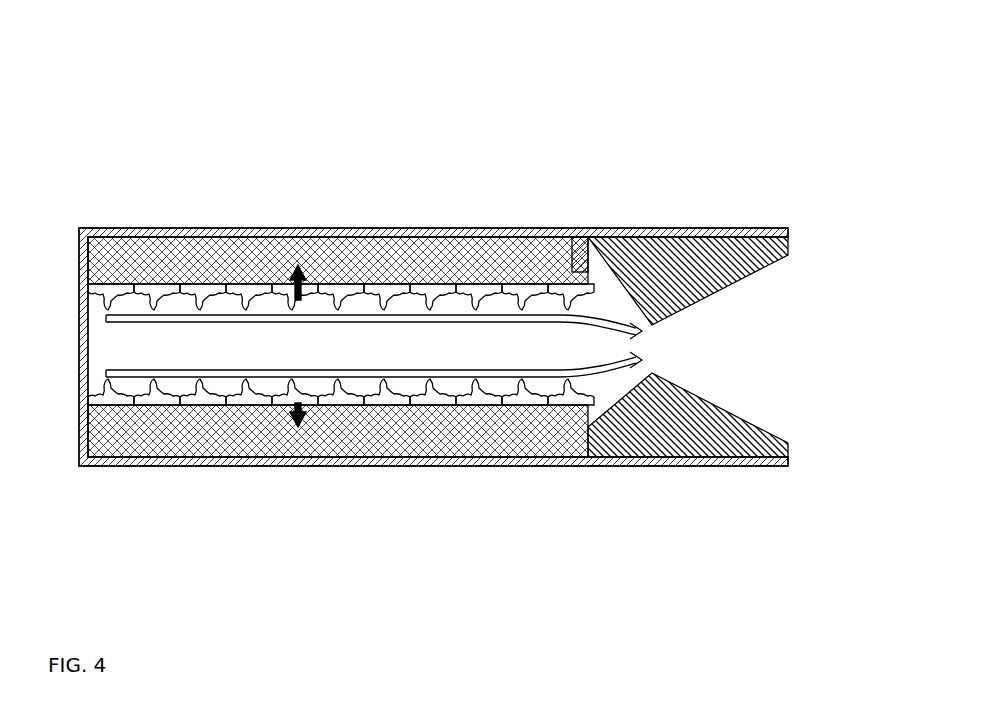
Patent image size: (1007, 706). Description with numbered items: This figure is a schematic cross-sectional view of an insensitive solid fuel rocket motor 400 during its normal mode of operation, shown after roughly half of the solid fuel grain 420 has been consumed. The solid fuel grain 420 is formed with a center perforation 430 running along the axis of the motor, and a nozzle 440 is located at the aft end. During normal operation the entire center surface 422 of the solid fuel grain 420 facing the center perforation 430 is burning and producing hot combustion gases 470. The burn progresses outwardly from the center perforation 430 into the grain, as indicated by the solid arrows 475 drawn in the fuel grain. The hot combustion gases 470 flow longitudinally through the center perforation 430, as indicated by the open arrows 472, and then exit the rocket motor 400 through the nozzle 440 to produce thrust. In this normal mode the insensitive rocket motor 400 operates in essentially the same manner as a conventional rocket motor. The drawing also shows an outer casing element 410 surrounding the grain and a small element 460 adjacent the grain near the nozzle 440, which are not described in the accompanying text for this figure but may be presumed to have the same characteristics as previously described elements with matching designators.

The insensitive rocket motor 400 is at (165, 48).
The housing 410 is at (712, 467).
The solid fuel grain 420 is at (490, 257).
The center surface 422 is at (207, 280).
The center perforation 430 is at (453, 352).
The nozzle 440 is at (745, 278).
The seal 460 is at (581, 252).
The hot combustion gases 470 is at (205, 405).
The open arrows 472 is at (359, 376).
The solid arrows 475 is at (303, 266).